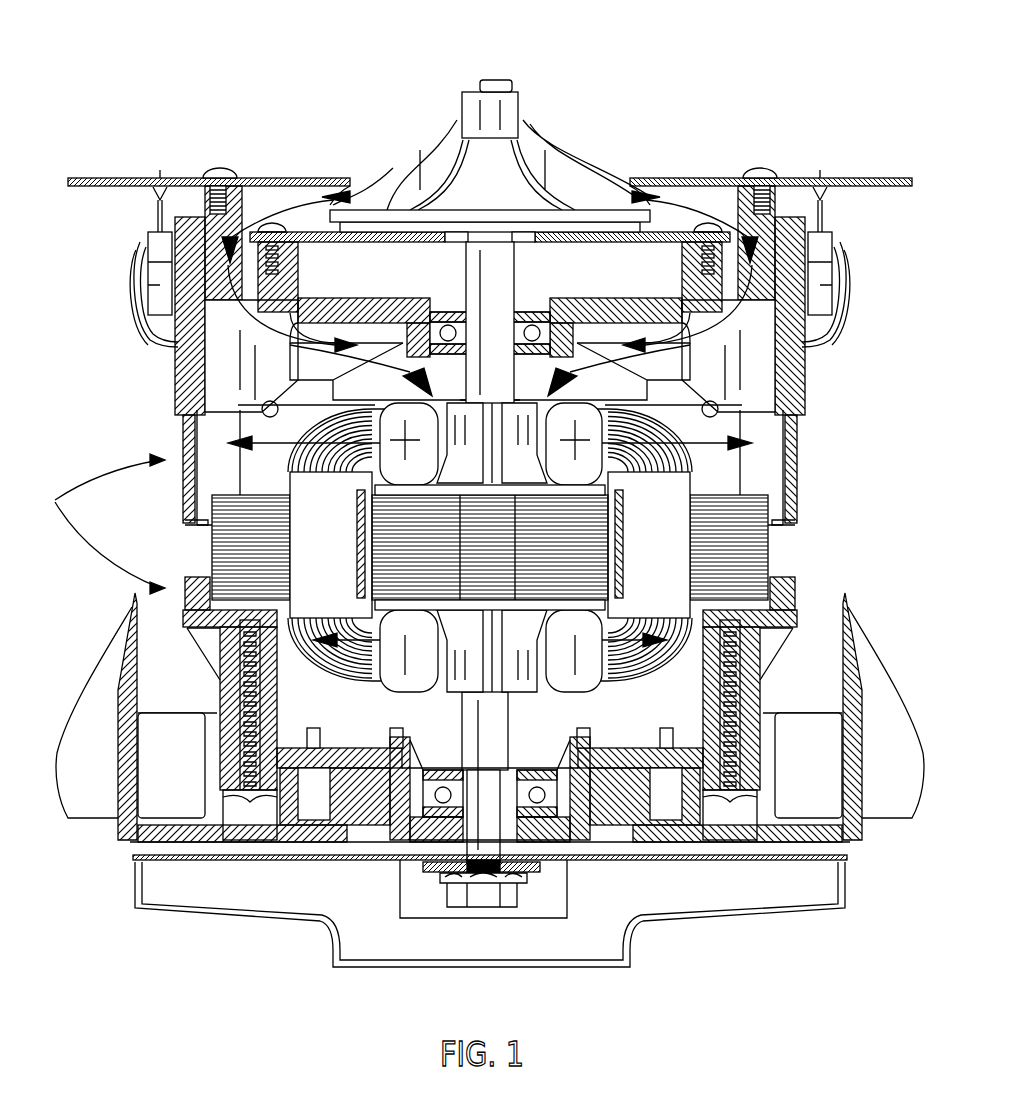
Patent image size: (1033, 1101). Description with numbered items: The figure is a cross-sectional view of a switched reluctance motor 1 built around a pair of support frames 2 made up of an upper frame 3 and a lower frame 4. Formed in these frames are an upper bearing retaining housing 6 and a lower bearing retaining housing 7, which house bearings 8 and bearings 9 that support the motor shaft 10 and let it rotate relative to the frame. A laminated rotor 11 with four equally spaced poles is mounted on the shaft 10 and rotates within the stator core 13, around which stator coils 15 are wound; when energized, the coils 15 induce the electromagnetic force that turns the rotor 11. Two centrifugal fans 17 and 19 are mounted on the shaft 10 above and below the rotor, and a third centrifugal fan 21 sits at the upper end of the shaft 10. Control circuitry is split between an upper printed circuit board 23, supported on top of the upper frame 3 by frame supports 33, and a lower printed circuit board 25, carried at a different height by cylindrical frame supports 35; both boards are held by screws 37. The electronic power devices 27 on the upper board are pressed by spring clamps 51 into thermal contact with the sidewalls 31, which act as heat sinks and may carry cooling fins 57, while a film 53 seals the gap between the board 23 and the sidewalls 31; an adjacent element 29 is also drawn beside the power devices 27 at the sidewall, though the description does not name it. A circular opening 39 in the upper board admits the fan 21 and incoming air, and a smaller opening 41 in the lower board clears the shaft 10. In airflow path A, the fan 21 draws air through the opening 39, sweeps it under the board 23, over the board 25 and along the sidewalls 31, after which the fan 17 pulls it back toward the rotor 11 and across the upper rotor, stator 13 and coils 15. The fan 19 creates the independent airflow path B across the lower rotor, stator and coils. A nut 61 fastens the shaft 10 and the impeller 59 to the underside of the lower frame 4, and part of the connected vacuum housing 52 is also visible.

The switched reluctance motor 1 is at (360, 120).
The support frames 2 is at (99, 524).
The upper frame 3 is at (190, 435).
The lower frame 4 is at (193, 647).
The upper bearing retaining housing 6 is at (435, 330).
The lower bearing retaining housing 7 is at (577, 860).
The bearings 8 is at (520, 330).
The bearings 9 is at (400, 918).
The motor shaft 10 is at (370, 860).
The rotor 11 is at (235, 550).
The stator core 13 is at (735, 548).
The stator coils 15 is at (790, 415).
The centrifugal fan 17 is at (525, 400).
The centrifugal fan 19 is at (445, 655).
The centrifugal fan 21 is at (540, 125).
The upper printed circuit board 23 is at (120, 178).
The lower printed circuit board 25 is at (675, 230).
The electronic power devices 27 is at (140, 280).
The terminal block 29 is at (148, 262).
The sidewalls 31 is at (190, 347).
The frame supports 33 is at (258, 175).
The cylindrical frame supports 35 is at (298, 280).
The screws 37 is at (215, 170).
The circular opening 39 is at (648, 178).
The smaller opening 41 is at (540, 240).
The spring clamps 51 is at (140, 320).
The vacuum housing 52 is at (850, 850).
The film 53 is at (158, 200).
The cooling fins 57 is at (215, 385).
The impeller 59 is at (230, 890).
The nut 61 is at (480, 895).
The airflow path A is at (392, 187).
The airflow path B is at (700, 585).